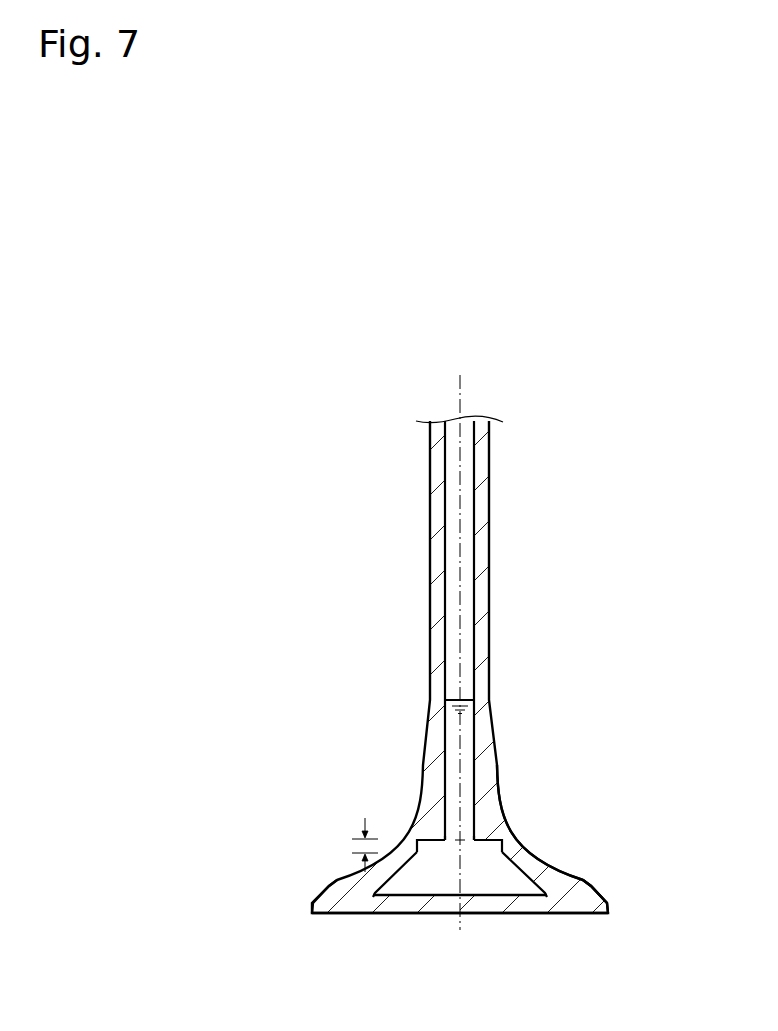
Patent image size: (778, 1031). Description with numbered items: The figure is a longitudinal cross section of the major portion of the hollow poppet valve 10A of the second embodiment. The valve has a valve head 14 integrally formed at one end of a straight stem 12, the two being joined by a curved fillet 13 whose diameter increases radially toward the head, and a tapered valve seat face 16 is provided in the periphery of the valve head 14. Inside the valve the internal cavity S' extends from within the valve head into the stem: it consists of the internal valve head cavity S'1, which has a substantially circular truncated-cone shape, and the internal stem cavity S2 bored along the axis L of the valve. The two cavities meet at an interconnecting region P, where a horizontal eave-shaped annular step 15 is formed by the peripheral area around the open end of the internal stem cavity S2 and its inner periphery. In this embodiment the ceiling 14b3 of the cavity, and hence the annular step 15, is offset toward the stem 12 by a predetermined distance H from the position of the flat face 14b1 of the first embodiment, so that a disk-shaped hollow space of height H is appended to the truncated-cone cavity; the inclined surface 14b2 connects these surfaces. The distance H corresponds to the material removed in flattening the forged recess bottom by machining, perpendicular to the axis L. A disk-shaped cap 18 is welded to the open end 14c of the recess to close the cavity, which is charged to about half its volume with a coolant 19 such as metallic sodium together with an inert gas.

The hollow poppet valve 10A is at (317, 660).
The stem 12 is at (430, 648).
The valve head 14 is at (318, 888).
The fillet 13 is at (510, 833).
The valve seat face 16 is at (595, 887).
The cap 18 is at (527, 907).
The coolant 19 is at (467, 741).
The annular step 15 is at (467, 844).
The open end 14c is at (381, 900).
The flat face 14b1 is at (484, 851).
The recess inclined surface 14b2 is at (403, 876).
The ceiling 14b3 is at (428, 846).
The interconnecting region P is at (460, 843).
The offset distance H is at (355, 845).
The axis L is at (460, 392).
The internal stem cavity S2 is at (484, 618).
The internal valve head cavity S'1 is at (534, 805).
The internal cavity S' is at (669, 686).